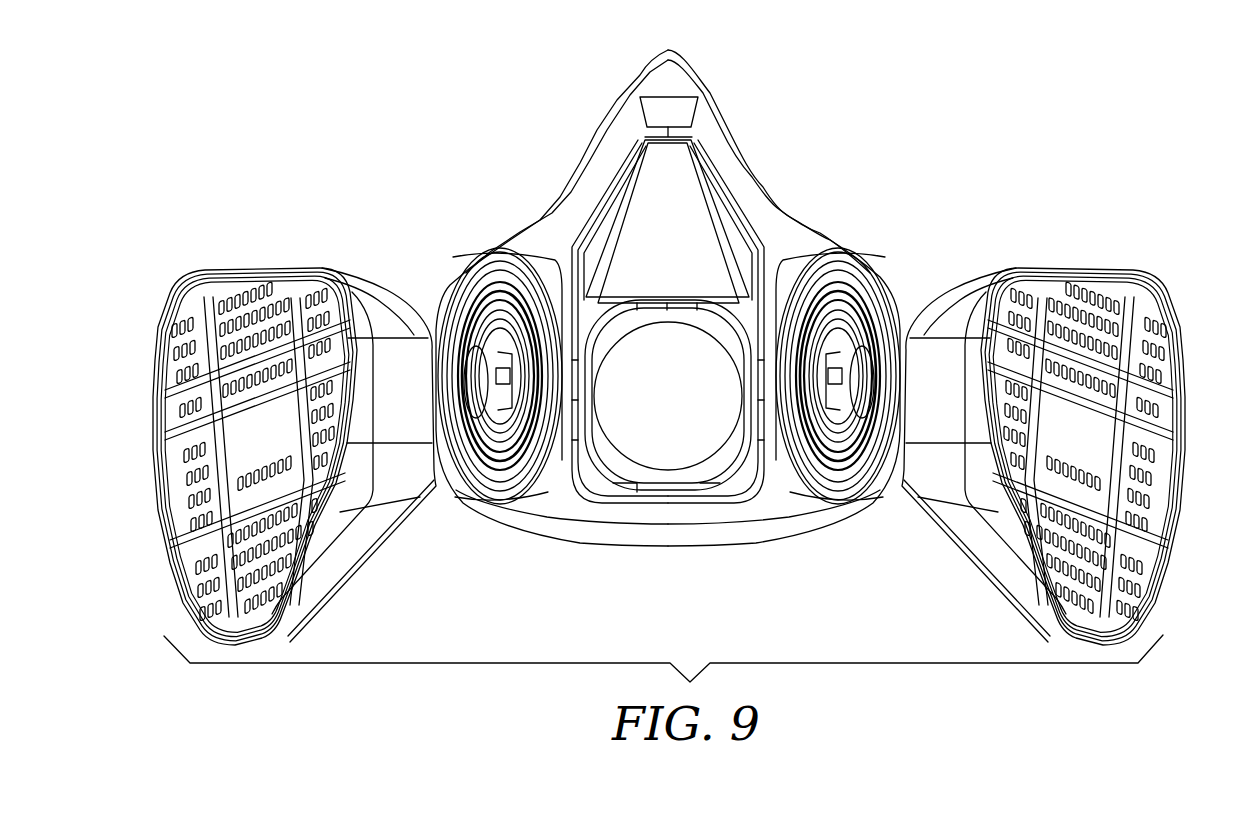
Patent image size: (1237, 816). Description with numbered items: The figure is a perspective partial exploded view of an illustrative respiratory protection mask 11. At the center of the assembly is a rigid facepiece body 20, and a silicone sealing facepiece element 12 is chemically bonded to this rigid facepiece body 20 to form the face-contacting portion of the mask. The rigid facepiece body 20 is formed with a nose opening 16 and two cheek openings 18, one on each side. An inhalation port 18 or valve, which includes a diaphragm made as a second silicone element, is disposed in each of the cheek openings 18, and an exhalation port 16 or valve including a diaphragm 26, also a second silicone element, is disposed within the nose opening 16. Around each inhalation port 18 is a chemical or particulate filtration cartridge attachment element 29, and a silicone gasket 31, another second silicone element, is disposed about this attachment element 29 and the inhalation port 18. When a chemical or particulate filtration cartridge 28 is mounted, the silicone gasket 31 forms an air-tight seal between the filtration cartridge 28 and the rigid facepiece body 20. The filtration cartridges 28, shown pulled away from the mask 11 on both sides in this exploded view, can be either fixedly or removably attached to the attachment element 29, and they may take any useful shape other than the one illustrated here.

The respiratory protection mask 11 is at (669, 347).
The silicone sealing facepiece element 12 is at (554, 200).
The nose opening 16 is at (724, 462).
The cheek opening 18 is at (447, 330).
The rigid facepiece body 20 is at (683, 248).
The diaphragm 26 is at (683, 404).
The chemical or particulate filtration cartridge 28 is at (272, 273).
The chemical or particulate filtration cartridge attachment element 29 is at (890, 330).
The silicone gasket 31 is at (487, 290).